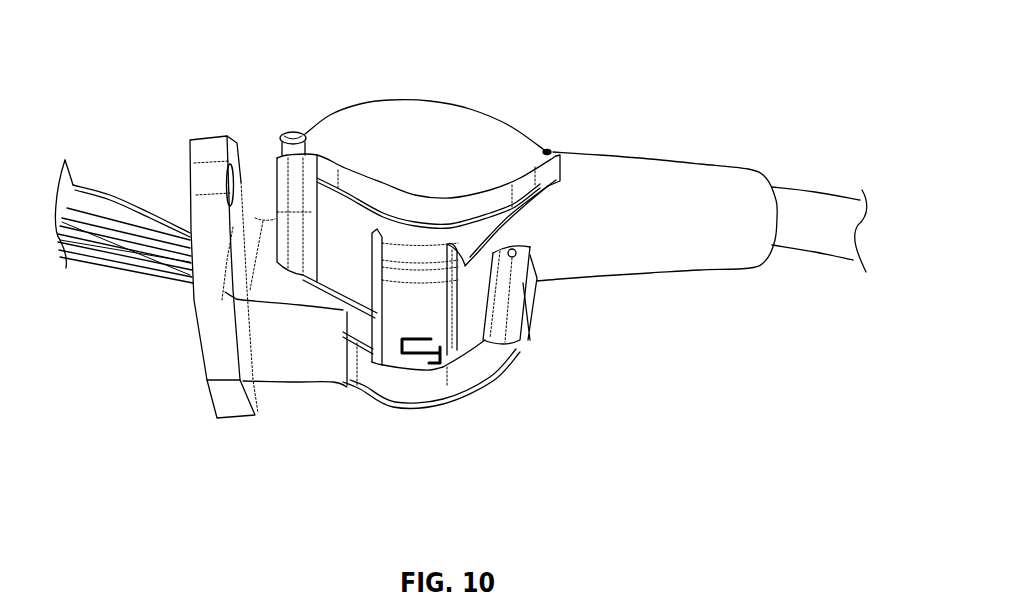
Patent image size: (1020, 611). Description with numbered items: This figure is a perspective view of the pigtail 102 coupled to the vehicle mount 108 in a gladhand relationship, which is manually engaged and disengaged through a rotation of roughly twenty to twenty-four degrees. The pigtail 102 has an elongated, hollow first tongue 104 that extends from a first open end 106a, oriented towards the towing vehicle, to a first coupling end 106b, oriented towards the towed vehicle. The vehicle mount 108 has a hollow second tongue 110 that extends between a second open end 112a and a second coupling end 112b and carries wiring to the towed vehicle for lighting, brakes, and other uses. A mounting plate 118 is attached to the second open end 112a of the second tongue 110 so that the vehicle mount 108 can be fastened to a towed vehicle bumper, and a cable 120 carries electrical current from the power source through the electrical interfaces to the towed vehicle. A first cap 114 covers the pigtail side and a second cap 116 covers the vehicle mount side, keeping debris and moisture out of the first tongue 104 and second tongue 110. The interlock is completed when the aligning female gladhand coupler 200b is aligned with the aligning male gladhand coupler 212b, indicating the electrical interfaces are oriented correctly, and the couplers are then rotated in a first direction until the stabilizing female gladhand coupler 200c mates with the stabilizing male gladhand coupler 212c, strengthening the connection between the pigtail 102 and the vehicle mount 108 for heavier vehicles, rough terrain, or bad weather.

The pigtail 102 is at (460, 259).
The first tongue 104 is at (640, 160).
The first open end 106a is at (740, 163).
The first coupling end 106b is at (275, 215).
The vehicle mount 108 is at (808, 196).
The second tongue 110 is at (353, 367).
The second open end 112a is at (277, 357).
The second coupling end 112b is at (470, 378).
The first cap 114 is at (431, 116).
The second cap 116 is at (423, 407).
The mounting plate 118 is at (211, 138).
The cable 120 is at (128, 220).
The aligning female gladhand coupler 200b is at (528, 327).
The stabilizing female gladhand coupler 200c is at (383, 355).
The aligning male gladhand coupler 212b is at (537, 293).
The stabilizing male gladhand coupler 212c is at (460, 348).